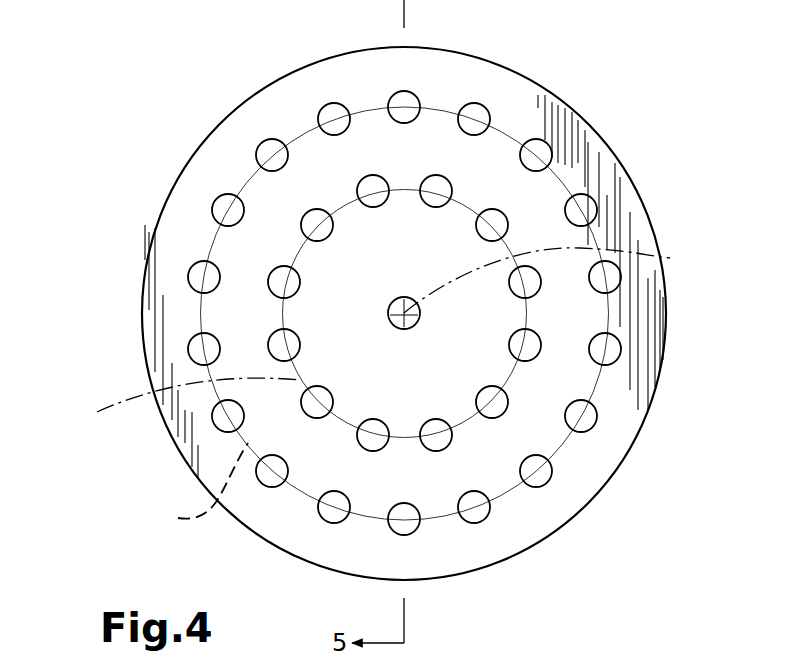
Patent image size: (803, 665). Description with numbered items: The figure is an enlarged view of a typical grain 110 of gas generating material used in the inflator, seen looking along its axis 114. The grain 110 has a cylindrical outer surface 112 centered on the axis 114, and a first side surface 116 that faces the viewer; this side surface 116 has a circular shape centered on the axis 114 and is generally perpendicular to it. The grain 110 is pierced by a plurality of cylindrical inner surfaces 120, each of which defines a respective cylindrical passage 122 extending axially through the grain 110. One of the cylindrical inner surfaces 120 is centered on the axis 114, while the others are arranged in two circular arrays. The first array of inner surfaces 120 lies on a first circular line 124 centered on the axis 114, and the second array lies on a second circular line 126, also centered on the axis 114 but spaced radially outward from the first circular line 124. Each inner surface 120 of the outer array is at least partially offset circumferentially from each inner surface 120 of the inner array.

The grain 110 is at (138, 78).
The cylindrical outer surface 112 is at (351, 52).
The axis 114 is at (670, 258).
The first side surface 116 is at (227, 147).
The cylindrical inner surfaces 120 is at (180, 272).
The cylindrical passage 122 is at (223, 196).
The first circular line 124 is at (173, 405).
The second circular line 126 is at (191, 488).